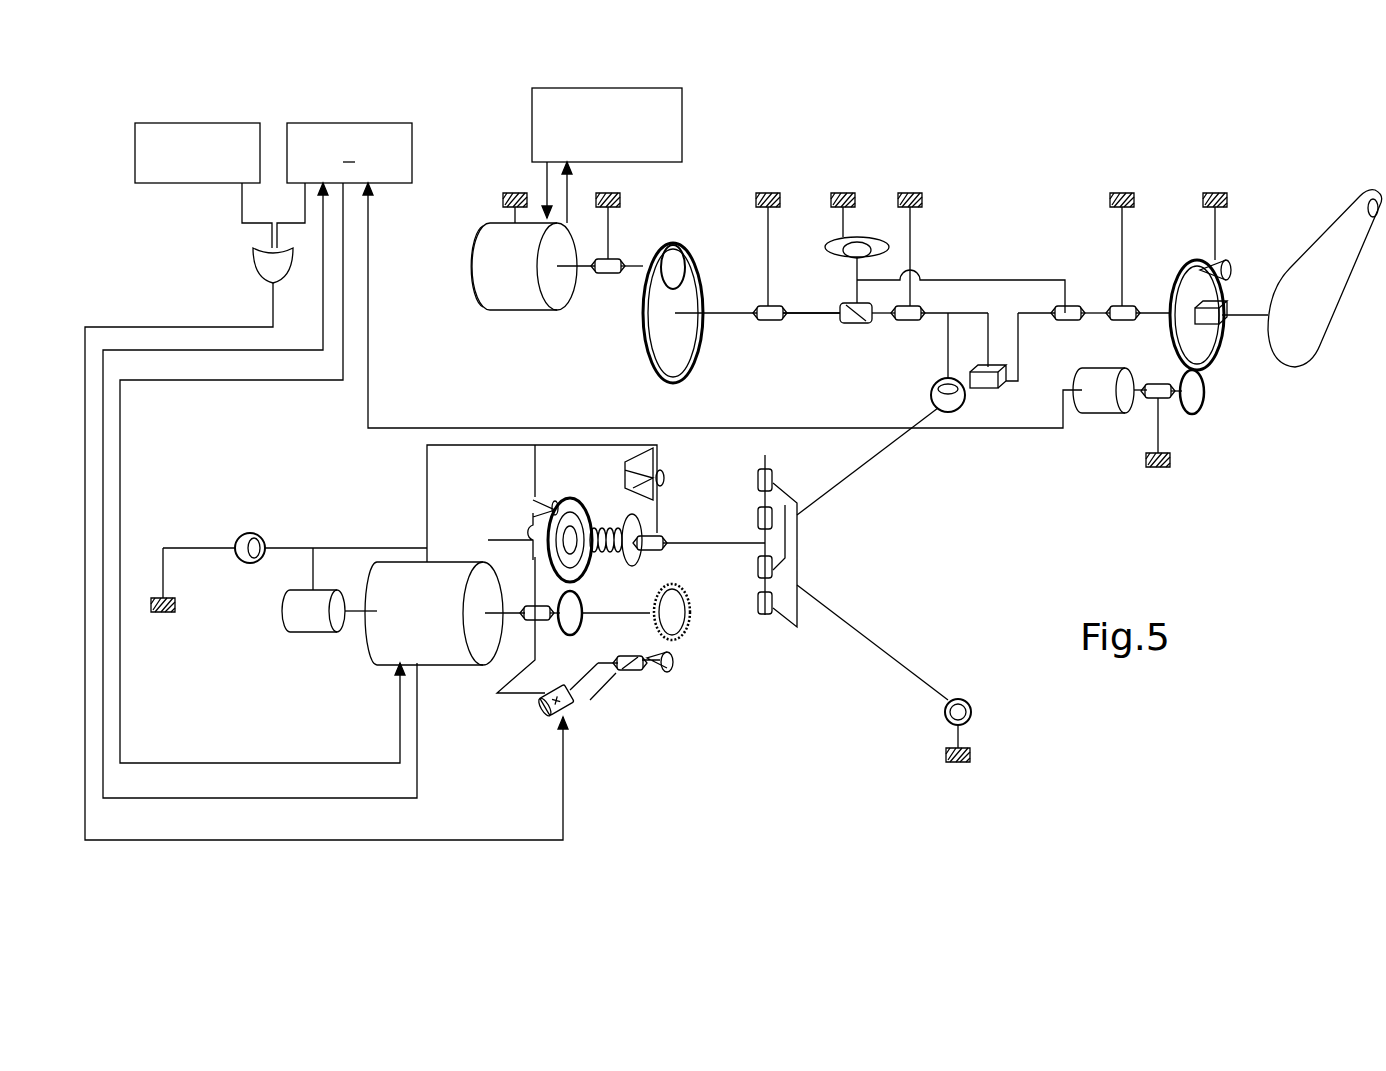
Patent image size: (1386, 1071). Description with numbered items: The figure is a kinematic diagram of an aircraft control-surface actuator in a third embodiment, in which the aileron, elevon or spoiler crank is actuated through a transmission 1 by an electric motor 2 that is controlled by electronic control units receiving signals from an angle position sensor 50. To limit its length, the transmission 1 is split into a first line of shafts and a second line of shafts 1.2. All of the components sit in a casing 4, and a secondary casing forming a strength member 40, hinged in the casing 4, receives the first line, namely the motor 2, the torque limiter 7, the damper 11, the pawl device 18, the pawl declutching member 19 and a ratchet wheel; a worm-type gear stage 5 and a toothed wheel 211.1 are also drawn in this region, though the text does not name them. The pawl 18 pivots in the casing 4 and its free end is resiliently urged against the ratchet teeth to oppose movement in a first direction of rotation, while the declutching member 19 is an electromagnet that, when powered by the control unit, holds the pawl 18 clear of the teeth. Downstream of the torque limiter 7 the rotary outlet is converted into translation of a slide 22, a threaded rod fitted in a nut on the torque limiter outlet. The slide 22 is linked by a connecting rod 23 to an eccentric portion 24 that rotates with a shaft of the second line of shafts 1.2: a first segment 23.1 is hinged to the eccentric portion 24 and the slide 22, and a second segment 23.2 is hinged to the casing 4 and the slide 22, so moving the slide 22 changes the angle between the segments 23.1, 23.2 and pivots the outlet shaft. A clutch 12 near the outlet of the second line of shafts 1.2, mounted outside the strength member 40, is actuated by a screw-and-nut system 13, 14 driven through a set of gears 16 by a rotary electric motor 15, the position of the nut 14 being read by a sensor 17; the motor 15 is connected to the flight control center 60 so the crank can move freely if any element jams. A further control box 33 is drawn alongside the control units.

The transmission 1 is at (817, 148).
The second line of shafts 1.2 is at (1082, 268).
The electric motor 2 is at (434, 613).
The casing 4 is at (160, 613).
The worm gear 5 is at (575, 497).
The torque limiter 7 is at (608, 515).
The damper 11 is at (292, 612).
The clutch 12 is at (1002, 330).
The screw 13 is at (811, 313).
The nut 14 is at (858, 324).
The rotary electric motor 15 is at (520, 310).
The set of gears 16 is at (670, 242).
The sensor 17 is at (474, 252).
The pawl device 18 is at (658, 670).
The pawl declutching member 19 is at (545, 710).
The slide 22 is at (700, 543).
The connecting rod 23 is at (860, 496).
The first segment 23.1 is at (871, 446).
The second segment 23.2 is at (875, 605).
The eccentric portion 24 is at (944, 348).
The control unit 33 is at (197, 153).
The strength member 40 is at (447, 445).
The angle position sensor 50 is at (1200, 414).
The flight control center 60 is at (607, 125).
The toothed wheel 211.1 is at (722, 597).